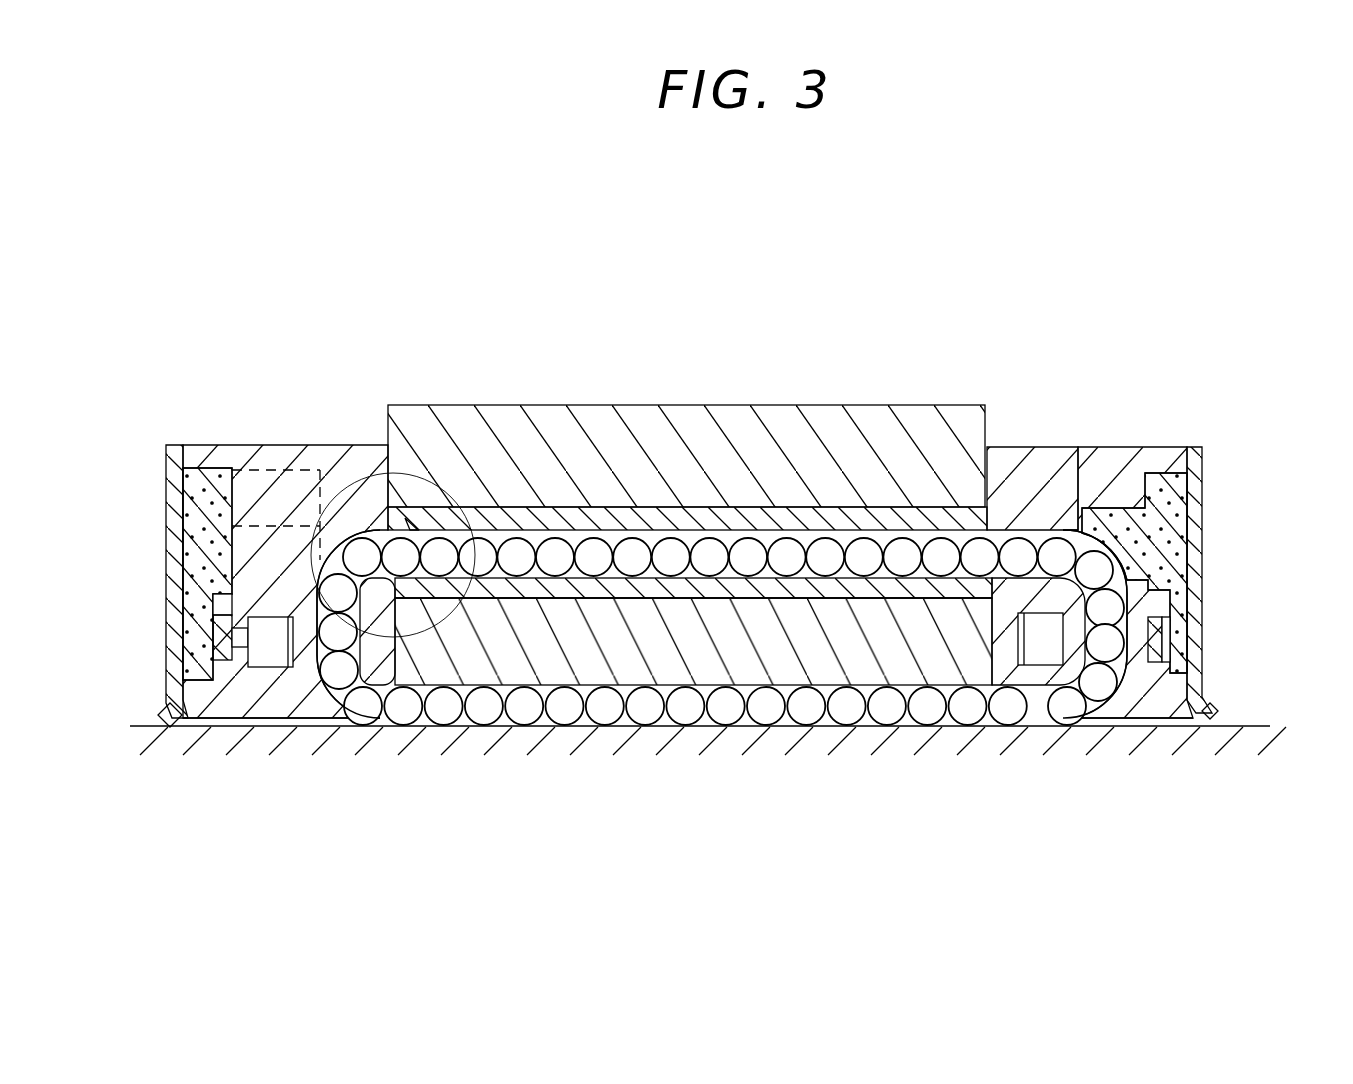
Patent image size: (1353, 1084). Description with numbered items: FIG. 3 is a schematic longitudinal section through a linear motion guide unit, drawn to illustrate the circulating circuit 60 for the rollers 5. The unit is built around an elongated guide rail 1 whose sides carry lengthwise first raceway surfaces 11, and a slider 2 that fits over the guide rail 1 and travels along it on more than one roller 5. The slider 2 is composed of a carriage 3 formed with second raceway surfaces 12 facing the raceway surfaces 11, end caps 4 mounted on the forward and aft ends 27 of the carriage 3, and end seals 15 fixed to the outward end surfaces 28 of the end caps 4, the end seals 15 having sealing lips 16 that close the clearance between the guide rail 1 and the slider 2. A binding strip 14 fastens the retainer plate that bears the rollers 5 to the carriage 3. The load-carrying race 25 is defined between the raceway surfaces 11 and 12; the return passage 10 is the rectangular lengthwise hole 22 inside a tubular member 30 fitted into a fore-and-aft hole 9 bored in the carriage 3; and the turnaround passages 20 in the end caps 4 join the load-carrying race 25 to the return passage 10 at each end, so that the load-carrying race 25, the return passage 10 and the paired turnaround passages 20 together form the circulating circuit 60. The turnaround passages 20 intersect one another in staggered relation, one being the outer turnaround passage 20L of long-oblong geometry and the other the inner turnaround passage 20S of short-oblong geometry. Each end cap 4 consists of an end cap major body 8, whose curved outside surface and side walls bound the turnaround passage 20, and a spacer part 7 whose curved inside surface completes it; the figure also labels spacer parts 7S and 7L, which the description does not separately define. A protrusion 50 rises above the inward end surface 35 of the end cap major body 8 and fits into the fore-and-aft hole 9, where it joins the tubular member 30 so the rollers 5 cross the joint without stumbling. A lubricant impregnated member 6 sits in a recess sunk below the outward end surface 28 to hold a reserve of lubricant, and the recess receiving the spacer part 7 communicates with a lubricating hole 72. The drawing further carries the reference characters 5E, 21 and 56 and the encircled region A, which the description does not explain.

The guide rail 1 is at (623, 747).
The slider 2 is at (1105, 435).
The carriage 3 is at (882, 440).
The end cap 4 is at (262, 700).
The roller 5 is at (278, 668).
The end ball 5E is at (830, 552).
The lubricant impregnated member 6 is at (188, 513).
The spacer part 7 is at (725, 725).
The short spacer 7S is at (388, 665).
The long spacer 7L is at (1040, 672).
The end cap major body 8 is at (1118, 470).
The fore-and-aft hole 9 is at (655, 510).
The return passage 10 is at (700, 540).
The first raceway surfaces 11 is at (687, 725).
The second raceway surfaces 12 is at (500, 690).
The binding strip 14 is at (222, 662).
The end seal 15 is at (180, 547).
The sealing lip 16 is at (158, 712).
The turnaround passage 20 is at (647, 617).
The outer turnaround passage 20L is at (242, 672).
The inner turnaround passage 20S is at (330, 690).
The side wall 21 is at (210, 478).
The lengthwise hole 22 is at (925, 540).
The load-carrying race 25 is at (788, 722).
The forward and aft ends 27 is at (370, 447).
The outward end surface 28 is at (170, 690).
The tubular member 30 is at (858, 507).
The inward end surface 35 is at (400, 507).
The protrusion 50 is at (418, 520).
The seal 56 is at (410, 527).
The circulating circuit 60 is at (543, 540).
The lubricating hole 72 is at (217, 627).
The enlarged region A is at (345, 420).